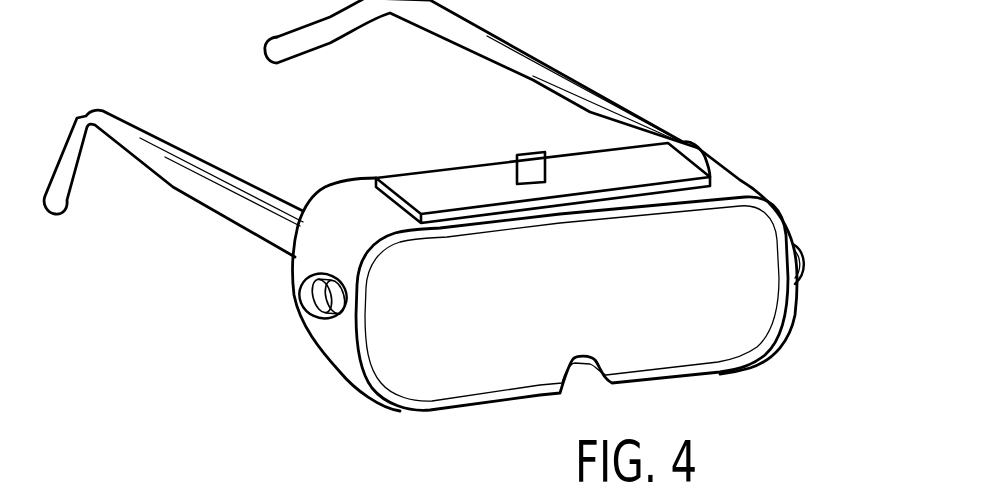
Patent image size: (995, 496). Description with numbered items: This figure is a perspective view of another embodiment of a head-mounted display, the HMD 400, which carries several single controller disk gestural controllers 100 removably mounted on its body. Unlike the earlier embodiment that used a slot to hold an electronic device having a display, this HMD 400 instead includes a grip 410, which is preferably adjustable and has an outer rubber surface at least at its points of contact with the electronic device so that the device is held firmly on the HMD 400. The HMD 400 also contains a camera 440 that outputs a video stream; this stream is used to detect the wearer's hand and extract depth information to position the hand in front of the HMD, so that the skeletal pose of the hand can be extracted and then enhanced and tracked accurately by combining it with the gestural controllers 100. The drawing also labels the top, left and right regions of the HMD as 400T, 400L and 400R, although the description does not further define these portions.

The HMD 400 is at (447, 218).
The top side of eyewear device 400T is at (426, 179).
The left side of eyewear device 400L is at (342, 348).
The right side of eyewear device 400R is at (790, 233).
The grip 410 is at (707, 167).
The camera 440 is at (522, 148).
The single controller disk gestural controller 100 is at (315, 323).